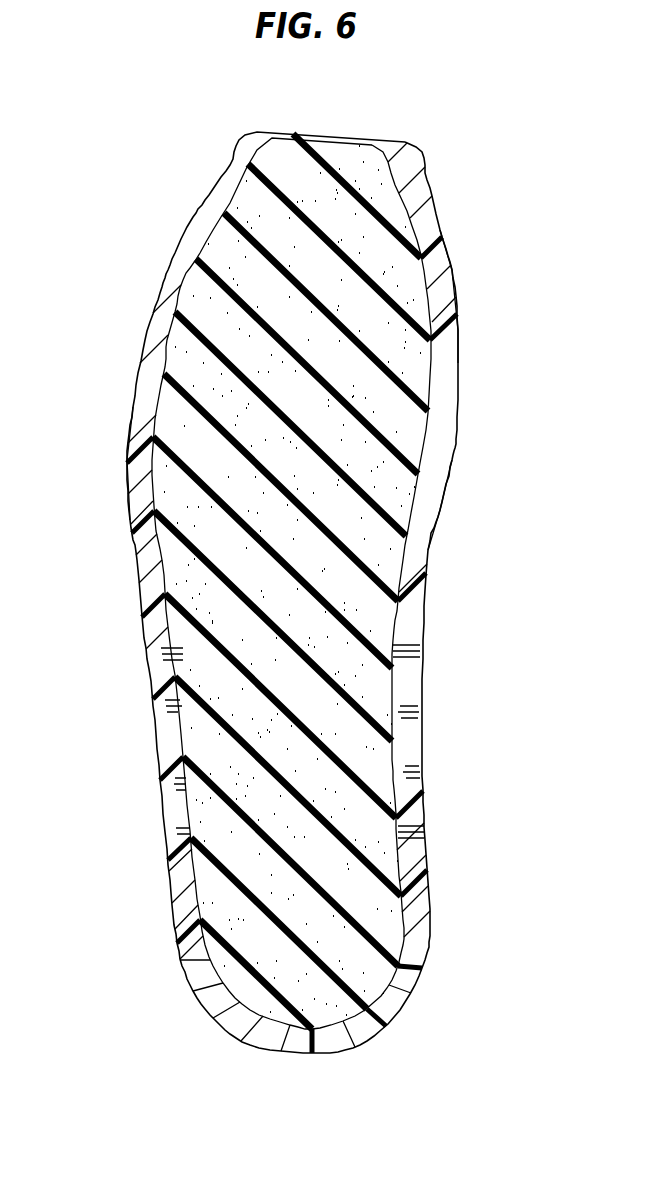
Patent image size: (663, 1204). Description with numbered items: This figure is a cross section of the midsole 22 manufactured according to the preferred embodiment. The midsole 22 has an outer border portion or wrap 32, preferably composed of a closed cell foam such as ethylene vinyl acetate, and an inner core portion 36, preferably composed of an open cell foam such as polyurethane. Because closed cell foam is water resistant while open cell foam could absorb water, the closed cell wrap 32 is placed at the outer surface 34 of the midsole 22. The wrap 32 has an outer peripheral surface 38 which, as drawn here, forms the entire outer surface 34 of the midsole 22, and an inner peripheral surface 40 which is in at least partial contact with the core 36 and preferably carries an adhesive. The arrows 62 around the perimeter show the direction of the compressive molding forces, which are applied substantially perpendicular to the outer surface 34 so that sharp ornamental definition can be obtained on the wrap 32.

The midsole 22 is at (464, 192).
The wrap 32 is at (457, 340).
The outer surface 34 is at (447, 493).
The inner core portion 36 is at (210, 300).
The outer peripheral surface 38 is at (128, 460).
The inner peripheral surface 40 is at (167, 377).
The arrows 62 is at (181, 228).